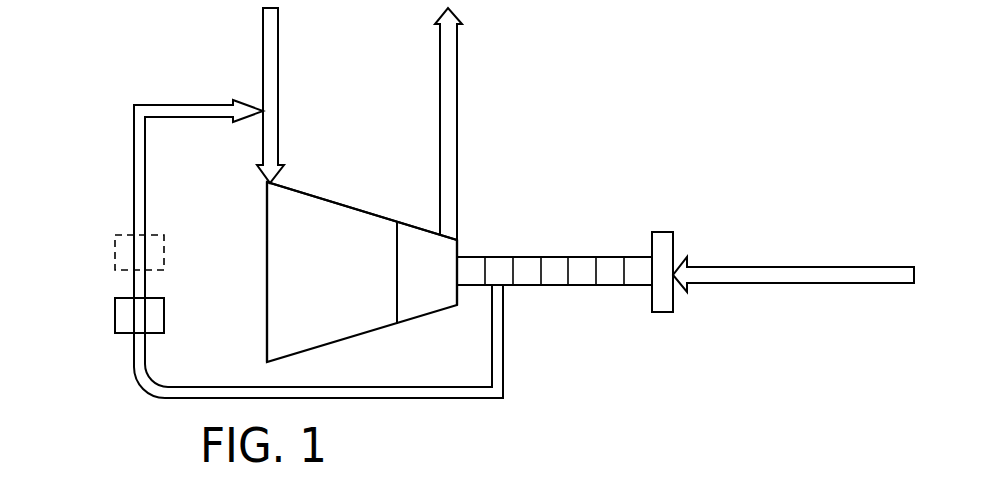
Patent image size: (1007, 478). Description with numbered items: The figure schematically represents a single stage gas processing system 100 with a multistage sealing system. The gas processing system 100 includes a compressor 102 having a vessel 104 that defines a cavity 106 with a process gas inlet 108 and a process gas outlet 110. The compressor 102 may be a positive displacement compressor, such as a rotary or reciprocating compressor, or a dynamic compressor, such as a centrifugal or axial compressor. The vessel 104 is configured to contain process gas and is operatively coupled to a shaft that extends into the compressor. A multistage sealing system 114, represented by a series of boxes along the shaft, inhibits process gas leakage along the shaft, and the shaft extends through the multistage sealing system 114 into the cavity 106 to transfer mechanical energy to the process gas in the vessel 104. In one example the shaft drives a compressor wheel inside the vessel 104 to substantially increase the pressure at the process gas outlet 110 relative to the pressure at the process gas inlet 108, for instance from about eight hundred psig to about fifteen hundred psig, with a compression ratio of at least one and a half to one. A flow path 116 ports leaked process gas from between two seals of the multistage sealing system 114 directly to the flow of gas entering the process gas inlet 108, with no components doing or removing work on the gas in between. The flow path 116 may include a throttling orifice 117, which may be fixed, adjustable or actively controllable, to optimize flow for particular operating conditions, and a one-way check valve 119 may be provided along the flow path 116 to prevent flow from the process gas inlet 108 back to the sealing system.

The gas processing system 100 is at (657, 68).
The compressor 102 is at (361, 192).
The vessel 104 is at (267, 292).
The cavity 106 is at (345, 282).
The process gas inlet 108 is at (265, 181).
The process gas outlet 110 is at (457, 240).
The multistage sealing system 114 is at (561, 222).
The flow path 116 is at (503, 366).
The throttling orifice 117 is at (115, 322).
The one-way check valve 119 is at (115, 250).